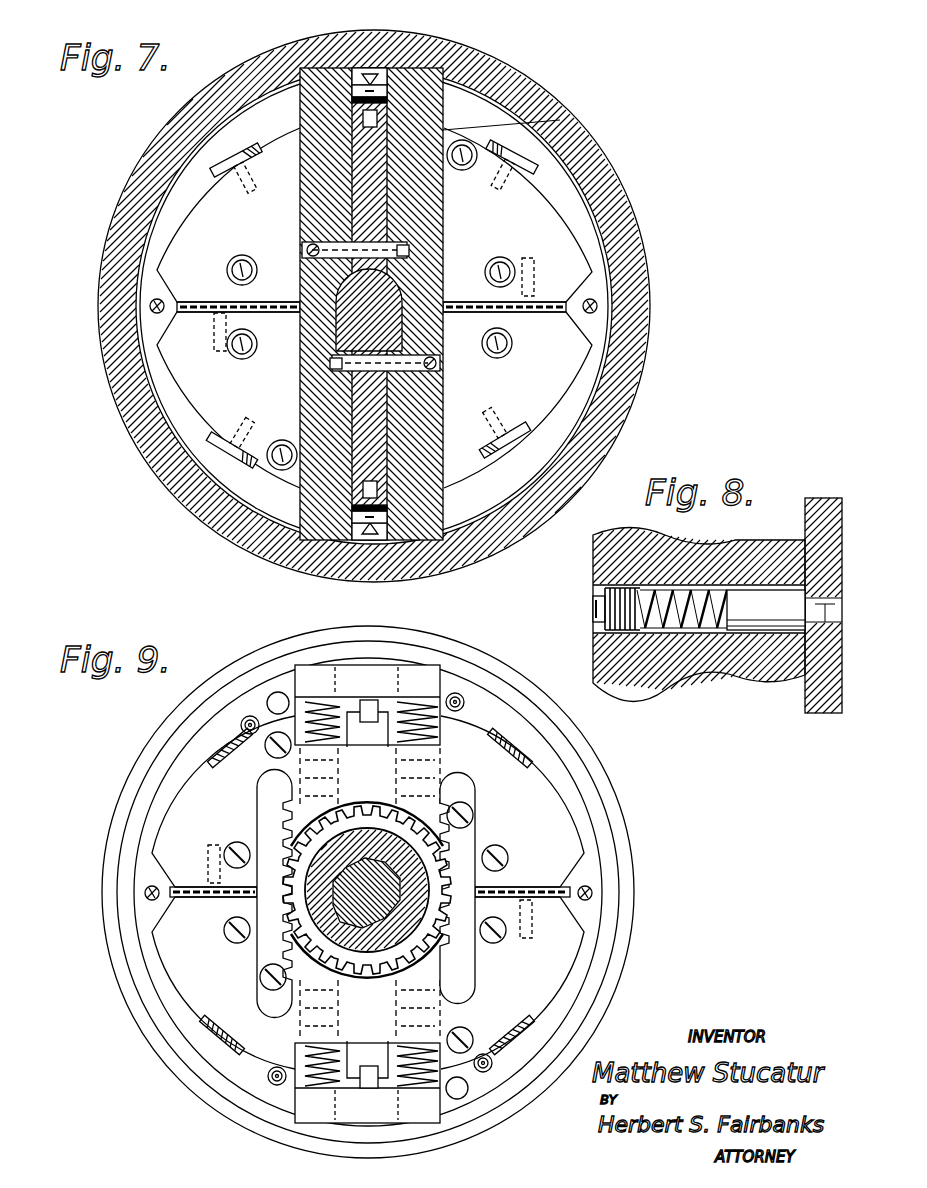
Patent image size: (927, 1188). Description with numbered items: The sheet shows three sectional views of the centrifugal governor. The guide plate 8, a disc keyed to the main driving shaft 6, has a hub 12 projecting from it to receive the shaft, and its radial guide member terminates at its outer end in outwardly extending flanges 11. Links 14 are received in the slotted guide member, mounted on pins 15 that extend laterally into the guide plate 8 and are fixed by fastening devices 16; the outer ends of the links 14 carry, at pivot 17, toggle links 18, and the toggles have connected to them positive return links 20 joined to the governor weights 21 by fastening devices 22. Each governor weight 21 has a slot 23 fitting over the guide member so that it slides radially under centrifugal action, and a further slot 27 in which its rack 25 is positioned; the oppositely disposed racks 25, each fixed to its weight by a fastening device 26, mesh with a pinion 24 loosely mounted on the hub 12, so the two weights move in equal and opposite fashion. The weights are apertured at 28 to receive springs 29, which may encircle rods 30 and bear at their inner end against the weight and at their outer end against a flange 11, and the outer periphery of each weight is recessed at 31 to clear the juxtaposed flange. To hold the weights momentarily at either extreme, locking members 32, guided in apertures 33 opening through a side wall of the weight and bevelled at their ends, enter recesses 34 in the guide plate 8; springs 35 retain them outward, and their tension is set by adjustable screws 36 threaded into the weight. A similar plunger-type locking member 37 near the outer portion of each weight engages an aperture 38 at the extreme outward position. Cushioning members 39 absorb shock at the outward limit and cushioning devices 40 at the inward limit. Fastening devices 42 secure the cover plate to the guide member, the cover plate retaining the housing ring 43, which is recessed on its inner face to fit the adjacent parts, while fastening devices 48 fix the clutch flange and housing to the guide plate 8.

In FIG. 7, the main driving shaft 6 is at (430, 300).
In FIG. 9, the main driving shaft 6 is at (425, 900).
In FIG. 7, the guide plate 8 is at (443, 130).
In FIG. 8, the guide plate 8 is at (805, 520).
In FIG. 7, the outwardly extending flanges 11 is at (371, 304).
In FIG. 9, the outwardly extending flanges 11 is at (372, 665).
In FIG. 9, the hub 12 is at (420, 875).
In FIG. 7, the links 14 is at (365, 150).
In FIG. 7, the pins 15 is at (322, 262).
In FIG. 7, the fastening devices 16 is at (300, 250).
In FIG. 7, the pivot 17 is at (425, 70).
In FIG. 7, the toggle links 18 is at (360, 72).
In FIG. 9, the positive return links 20 is at (503, 648).
In FIG. 7, the governor weights 21 is at (643, 396).
In FIG. 8, the governor weights 21 is at (750, 685).
In FIG. 9, the governor weights 21 is at (565, 800).
In FIG. 9, the fastening devices 22 is at (366, 750).
In FIG. 7, the slot 23 is at (445, 240).
In FIG. 9, the pinion 24 is at (500, 850).
In FIG. 7, the racks 25 is at (300, 316).
In FIG. 9, the racks 25 is at (257, 806).
In FIG. 9, the fastening device 26 is at (474, 815).
In FIG. 9, the slot 27 is at (262, 782).
In FIG. 9, the apertures 28 is at (262, 750).
In FIG. 9, the springs 29 is at (205, 1130).
In FIG. 9, the rods 30 is at (290, 1030).
In FIG. 9, the recess 31 is at (240, 720).
In FIG. 7, the locking members 32 is at (228, 268).
In FIG. 8, the locking members 32 is at (766, 610).
In FIG. 7, the apertures 33 is at (246, 244).
In FIG. 8, the apertures 33 is at (706, 635).
In FIG. 8, the recesses or apertures 34 is at (822, 620).
In FIG. 8, the springs 35 is at (675, 635).
In FIG. 8, the adjustable screws 36 is at (596, 597).
In FIG. 9, the adjustable screws 36 is at (236, 843).
In FIG. 7, the locking member 37 is at (462, 170).
In FIG. 9, the aperture 38 is at (276, 692).
In FIG. 7, the cushioning members 39 is at (250, 140).
In FIG. 9, the cushioning members 39 is at (222, 743).
In FIG. 7, the cushioning devices 40 is at (228, 300).
In FIG. 9, the cushioning devices 40 is at (214, 898).
In FIG. 7, the fastening devices 42 is at (150, 308).
In FIG. 9, the fastening devices 42 is at (145, 892).
In FIG. 7, the housing ring 43 is at (625, 268).
In FIG. 9, the housing ring 43 is at (610, 832).
In FIG. 9, the fastening devices 48 is at (240, 725).